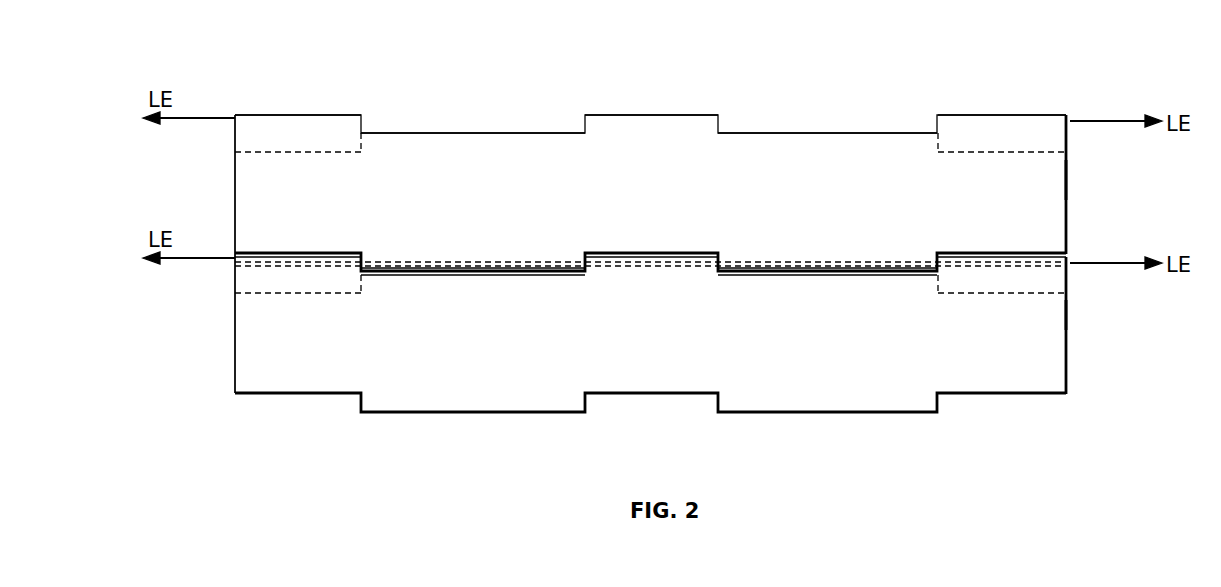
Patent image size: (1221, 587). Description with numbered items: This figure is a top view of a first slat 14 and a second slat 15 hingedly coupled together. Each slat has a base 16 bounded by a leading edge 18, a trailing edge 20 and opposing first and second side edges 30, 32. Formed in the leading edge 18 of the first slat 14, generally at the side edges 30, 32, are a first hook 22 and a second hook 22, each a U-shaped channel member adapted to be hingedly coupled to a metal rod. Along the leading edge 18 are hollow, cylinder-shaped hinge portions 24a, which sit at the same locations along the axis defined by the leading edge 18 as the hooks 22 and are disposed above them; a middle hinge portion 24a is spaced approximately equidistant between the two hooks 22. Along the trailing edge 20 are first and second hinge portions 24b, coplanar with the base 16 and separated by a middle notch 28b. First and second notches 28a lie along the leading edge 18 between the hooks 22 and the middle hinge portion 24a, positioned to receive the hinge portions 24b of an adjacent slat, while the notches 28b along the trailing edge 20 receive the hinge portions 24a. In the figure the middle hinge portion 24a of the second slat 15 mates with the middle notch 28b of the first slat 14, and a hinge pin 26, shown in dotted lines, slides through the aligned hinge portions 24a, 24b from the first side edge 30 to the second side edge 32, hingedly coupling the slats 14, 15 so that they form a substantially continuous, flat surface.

The first slat 14 is at (1162, 193).
The second slat 15 is at (1134, 348).
The base 16 is at (657, 199).
The leading edge 18 is at (1003, 115).
The trailing edge 20 is at (1068, 253).
The hook 22 is at (235, 138).
The hinge portion 24a is at (313, 115).
The hinge portion 24b is at (522, 270).
The hinge pin 26 is at (427, 262).
The notch 28a is at (441, 133).
The notch 28b is at (293, 253).
The first side edge 30 is at (235, 177).
The second side edge 32 is at (1068, 177).